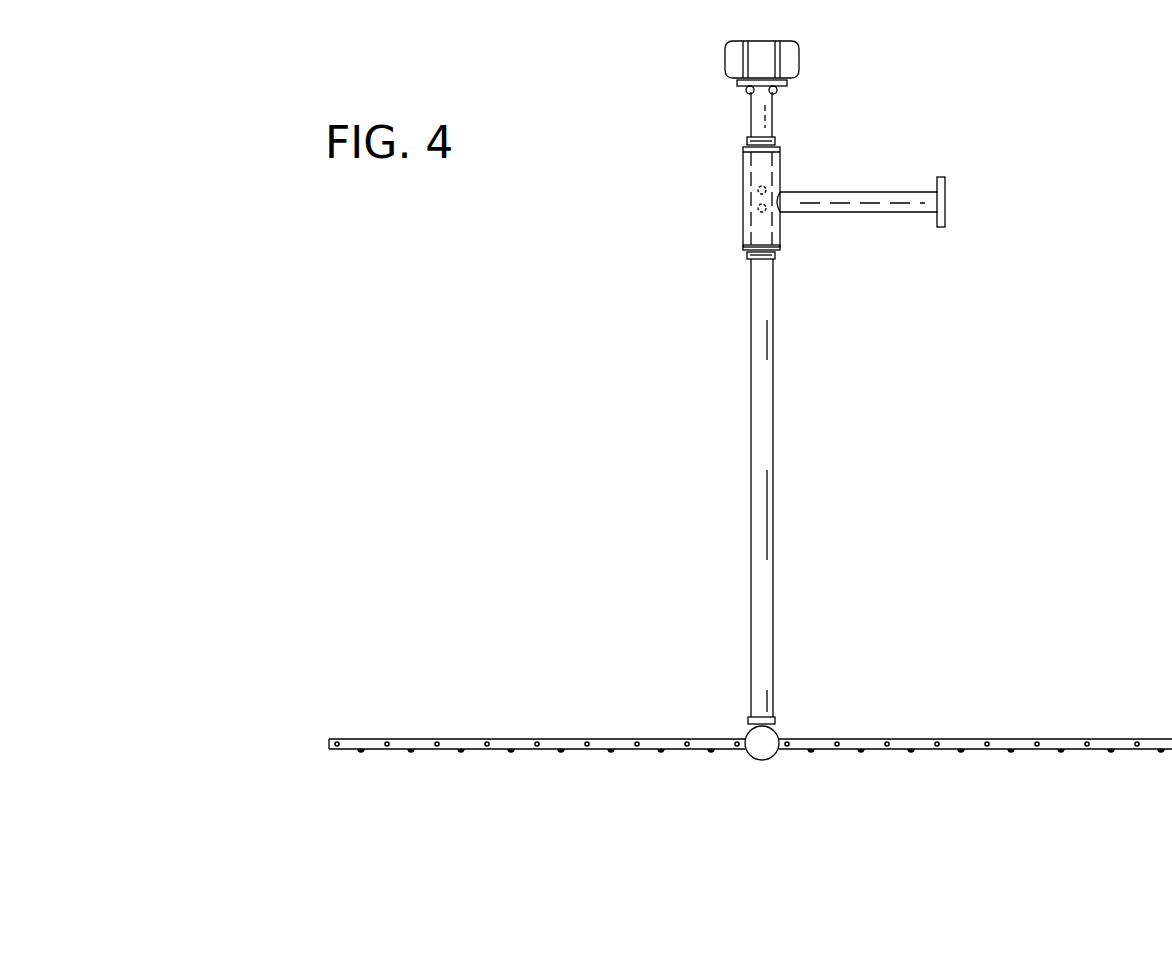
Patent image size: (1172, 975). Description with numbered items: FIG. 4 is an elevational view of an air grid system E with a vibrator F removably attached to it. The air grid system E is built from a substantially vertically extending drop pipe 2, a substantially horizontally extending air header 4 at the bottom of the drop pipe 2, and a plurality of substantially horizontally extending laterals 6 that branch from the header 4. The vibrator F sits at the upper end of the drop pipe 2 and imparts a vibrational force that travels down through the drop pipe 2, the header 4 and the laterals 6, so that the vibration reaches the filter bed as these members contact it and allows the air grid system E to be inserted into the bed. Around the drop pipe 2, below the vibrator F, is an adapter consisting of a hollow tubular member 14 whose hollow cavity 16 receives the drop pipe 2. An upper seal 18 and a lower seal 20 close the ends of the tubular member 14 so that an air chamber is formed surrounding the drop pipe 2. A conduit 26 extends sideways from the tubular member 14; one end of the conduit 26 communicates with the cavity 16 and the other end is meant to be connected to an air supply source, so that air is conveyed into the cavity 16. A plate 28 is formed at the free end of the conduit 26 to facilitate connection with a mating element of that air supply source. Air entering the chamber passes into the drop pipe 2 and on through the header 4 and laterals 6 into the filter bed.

The vibrator F is at (800, 57).
The air grid system E is at (695, 427).
The upper seal 18 is at (750, 138).
The hollow tubular member 14 is at (782, 162).
The hollow cavity 16 is at (745, 236).
The lower seal 20 is at (778, 256).
The conduit 26 is at (903, 212).
The plate 28 is at (945, 182).
The drop pipe 2 is at (773, 463).
The air header 4 is at (772, 760).
The laterals 6 is at (593, 738).